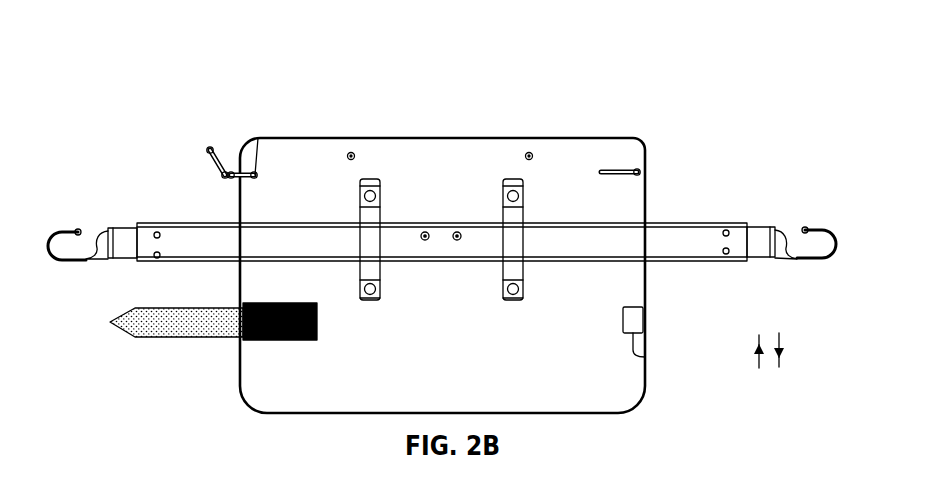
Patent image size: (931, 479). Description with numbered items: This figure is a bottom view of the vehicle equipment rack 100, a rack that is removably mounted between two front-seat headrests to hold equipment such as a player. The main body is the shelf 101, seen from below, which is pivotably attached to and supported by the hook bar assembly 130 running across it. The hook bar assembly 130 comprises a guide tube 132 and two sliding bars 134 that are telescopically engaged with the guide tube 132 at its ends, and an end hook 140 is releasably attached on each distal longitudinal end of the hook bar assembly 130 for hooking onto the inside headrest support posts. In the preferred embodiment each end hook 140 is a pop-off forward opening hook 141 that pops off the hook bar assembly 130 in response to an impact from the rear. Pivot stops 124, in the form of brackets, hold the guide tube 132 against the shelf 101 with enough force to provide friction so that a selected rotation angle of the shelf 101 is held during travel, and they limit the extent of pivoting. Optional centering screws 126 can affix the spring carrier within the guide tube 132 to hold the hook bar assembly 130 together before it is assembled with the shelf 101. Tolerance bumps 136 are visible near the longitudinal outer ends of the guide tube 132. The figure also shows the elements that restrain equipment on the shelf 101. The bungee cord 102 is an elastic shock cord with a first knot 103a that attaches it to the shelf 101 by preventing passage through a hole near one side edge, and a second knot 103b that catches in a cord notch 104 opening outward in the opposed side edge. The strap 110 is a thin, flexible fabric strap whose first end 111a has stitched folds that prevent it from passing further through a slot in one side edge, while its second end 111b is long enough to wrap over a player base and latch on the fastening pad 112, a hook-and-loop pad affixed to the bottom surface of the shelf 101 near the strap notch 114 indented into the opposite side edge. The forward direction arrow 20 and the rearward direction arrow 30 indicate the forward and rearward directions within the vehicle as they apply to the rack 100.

The vehicle equipment rack 100 is at (518, 108).
The shelf 101 is at (460, 293).
The bungee cord 102 is at (197, 130).
The first knot 103a is at (658, 155).
The second knot 103b is at (247, 134).
The cord notch 104 is at (300, 135).
The strap 110 is at (155, 314).
The first end of strap 111a is at (673, 339).
The second end of strap 111b is at (147, 365).
The fastening pad 112 is at (249, 357).
The strap notch 114 is at (212, 338).
The pivot stops 124 is at (460, 200).
The centering screws 126 is at (441, 215).
The hook bar assembly 130 is at (456, 266).
The guide tube 132 is at (437, 263).
The sliding bars 134 is at (440, 200).
The tolerance bumps 136 is at (427, 205).
The end hook 140 is at (442, 217).
The pop-off forward opening hook 141 is at (442, 202).
The forward direction arrow 20 is at (744, 365).
The rearward direction arrow 30 is at (803, 347).